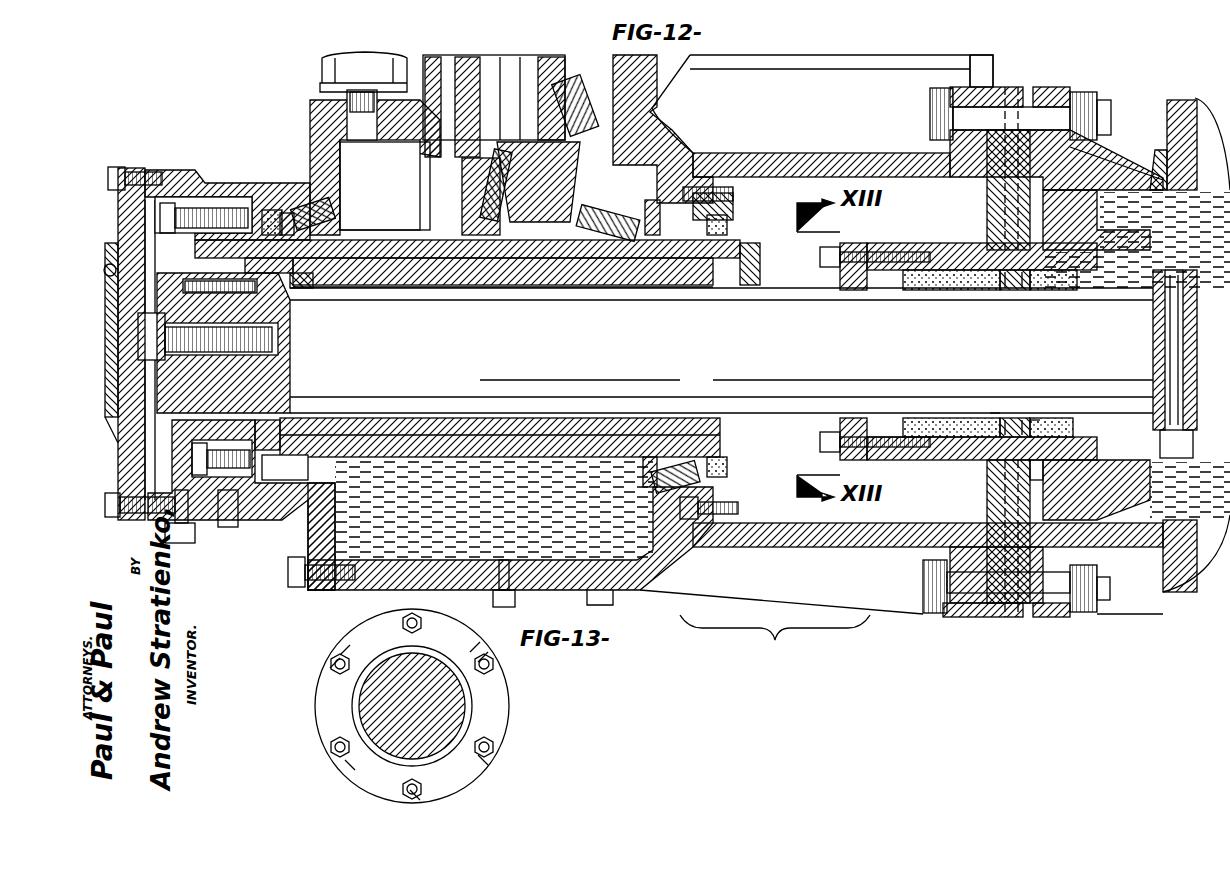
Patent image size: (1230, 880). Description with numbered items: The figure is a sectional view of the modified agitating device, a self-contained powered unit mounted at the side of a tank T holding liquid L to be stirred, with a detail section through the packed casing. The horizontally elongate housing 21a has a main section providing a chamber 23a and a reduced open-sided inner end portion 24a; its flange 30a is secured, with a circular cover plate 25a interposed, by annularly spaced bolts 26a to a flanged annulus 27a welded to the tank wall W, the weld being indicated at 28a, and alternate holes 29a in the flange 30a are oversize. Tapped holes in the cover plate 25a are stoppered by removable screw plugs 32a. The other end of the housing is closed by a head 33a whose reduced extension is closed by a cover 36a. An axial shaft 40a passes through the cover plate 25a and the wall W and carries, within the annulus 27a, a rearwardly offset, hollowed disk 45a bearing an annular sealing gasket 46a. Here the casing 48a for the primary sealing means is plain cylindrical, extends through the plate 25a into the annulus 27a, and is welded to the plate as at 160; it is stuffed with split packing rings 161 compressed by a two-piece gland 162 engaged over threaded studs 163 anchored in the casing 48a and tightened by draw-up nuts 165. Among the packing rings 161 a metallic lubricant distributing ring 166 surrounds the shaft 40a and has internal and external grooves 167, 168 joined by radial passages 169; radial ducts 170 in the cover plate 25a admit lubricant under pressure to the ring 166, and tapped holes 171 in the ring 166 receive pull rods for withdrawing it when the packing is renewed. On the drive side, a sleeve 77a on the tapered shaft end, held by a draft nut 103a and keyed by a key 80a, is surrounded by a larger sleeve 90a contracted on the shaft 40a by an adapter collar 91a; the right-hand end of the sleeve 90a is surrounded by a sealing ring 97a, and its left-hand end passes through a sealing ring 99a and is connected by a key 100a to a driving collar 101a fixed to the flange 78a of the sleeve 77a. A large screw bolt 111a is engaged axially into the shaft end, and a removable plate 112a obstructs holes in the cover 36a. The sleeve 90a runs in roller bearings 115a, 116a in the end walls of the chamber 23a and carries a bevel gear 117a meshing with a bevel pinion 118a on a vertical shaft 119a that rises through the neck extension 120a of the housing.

In FIG. 12, the housing 21a is at (875, 363).
In FIG. 12, the chamber 23a is at (362, 590).
In FIG. 12, the reduced open sided inner end portion 24a is at (785, 547).
In FIG. 12, the cover plate 25a is at (1000, 90).
In FIG. 12, the bolts 26a is at (930, 99).
In FIG. 12, the flanged annulus 27a is at (1130, 173).
In FIG. 12, the weld 28a is at (1158, 165).
In FIG. 12, the holes 29a is at (975, 617).
In FIG. 12, the flange 30a is at (975, 58).
In FIG. 12, the screw plugs 32a is at (990, 208).
In FIG. 12, the head 33a is at (312, 101).
In FIG. 12, the cover 36a is at (140, 167).
In FIG. 12, the shaft 40a is at (655, 343).
In FIG. 13, the shaft 40a is at (380, 710).
In FIG. 12, the disk 45a is at (1153, 308).
In FIG. 12, the annular sealing gasket 46a is at (1000, 511).
In FIG. 12, the casing 48a is at (940, 248).
In FIG. 12, the sleeve 77a is at (552, 280).
In FIG. 12, the flange 78a is at (178, 460).
In FIG. 12, the key 80a is at (298, 290).
In FIG. 12, the sleeve 90a is at (545, 438).
In FIG. 12, the adapter collar 91a is at (748, 285).
In FIG. 12, the sealing ring 97a is at (722, 468).
In FIG. 12, the sealing ring 99a is at (272, 210).
In FIG. 12, the key 100a is at (268, 258).
In FIG. 12, the driving collar 101a is at (215, 205).
In FIG. 12, the draft nut 103a is at (180, 292).
In FIG. 12, the screw bolt 111a is at (145, 334).
In FIG. 12, the removable plate 112a is at (110, 278).
In FIG. 12, the roller bearing 115a is at (333, 213).
In FIG. 12, the roller bearing 116a is at (665, 229).
In FIG. 12, the bevel gear 117a is at (470, 282).
In FIG. 12, the bevel pinion 118a is at (568, 199).
In FIG. 12, the vertical shaft 119a is at (540, 60).
In FIG. 12, the vertical neck extension 120a is at (395, 56).
In FIG. 12, the weld 160 is at (990, 462).
In FIG. 12, the split packing rings 161 is at (925, 290).
In FIG. 13, the split packing rings 161 is at (352, 716).
In FIG. 12, the gland 162 is at (852, 290).
In FIG. 13, the gland 162 is at (505, 688).
In FIG. 12, the threaded studs 163 is at (872, 250).
In FIG. 13, the threaded studs 163 is at (408, 623).
In FIG. 12, the draw-up nuts 165 is at (822, 258).
In FIG. 13, the draw-up nuts 165 is at (331, 662).
In FIG. 12, the lubricant distributing ring 166 is at (990, 292).
In FIG. 12, the internal circumferential groove 167 is at (1008, 292).
In FIG. 12, the external circumferential groove 168 is at (1035, 418).
In FIG. 12, the radial passages 169 is at (1024, 292).
In FIG. 12, the radial ducts 170 is at (955, 149).
In FIG. 12, the tapped holes 171 is at (990, 413).
In FIG. 12, the wall W is at (1170, 100).
In FIG. 12, the liquid L is at (1218, 110).
In FIG. 12, the tank T is at (1145, 566).